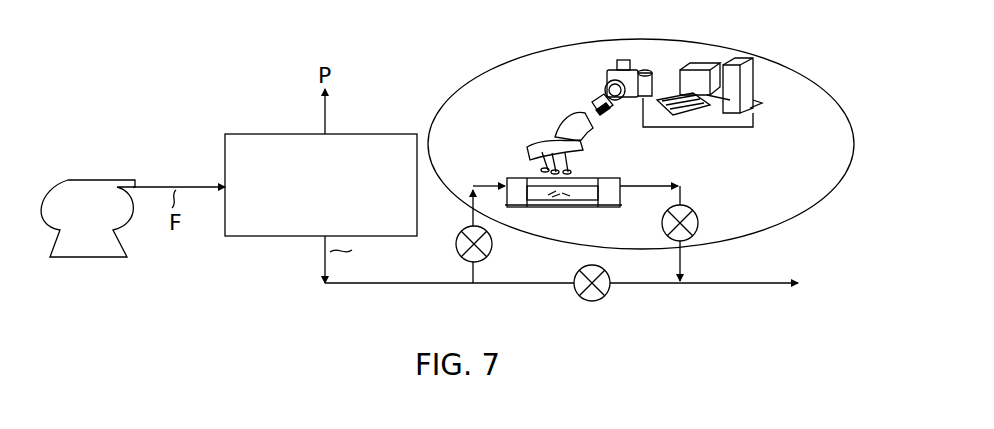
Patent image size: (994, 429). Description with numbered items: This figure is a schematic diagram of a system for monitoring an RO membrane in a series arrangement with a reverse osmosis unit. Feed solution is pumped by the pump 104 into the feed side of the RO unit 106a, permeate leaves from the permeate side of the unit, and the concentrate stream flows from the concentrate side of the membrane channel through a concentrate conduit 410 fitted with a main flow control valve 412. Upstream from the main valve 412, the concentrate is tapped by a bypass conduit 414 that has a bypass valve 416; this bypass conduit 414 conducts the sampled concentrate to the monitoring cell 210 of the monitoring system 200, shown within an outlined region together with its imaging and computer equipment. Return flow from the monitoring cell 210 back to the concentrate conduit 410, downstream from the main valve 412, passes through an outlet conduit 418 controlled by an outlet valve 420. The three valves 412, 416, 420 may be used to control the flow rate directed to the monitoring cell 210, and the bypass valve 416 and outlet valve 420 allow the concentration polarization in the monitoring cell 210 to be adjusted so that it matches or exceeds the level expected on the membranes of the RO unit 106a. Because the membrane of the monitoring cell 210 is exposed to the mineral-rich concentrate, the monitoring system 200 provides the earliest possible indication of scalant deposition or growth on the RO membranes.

The pump 104 is at (121, 237).
The reverse osmosis unit 106a is at (402, 225).
The monitoring system 200 is at (722, 46).
The monitoring cell 210 is at (607, 178).
The concentrate conduit 410 is at (325, 262).
The main flow control valve 412 is at (607, 297).
The bypass conduit 414 is at (472, 277).
The bypass valve 416 is at (493, 243).
The outlet conduit 418 is at (683, 263).
The outlet valve 420 is at (698, 215).